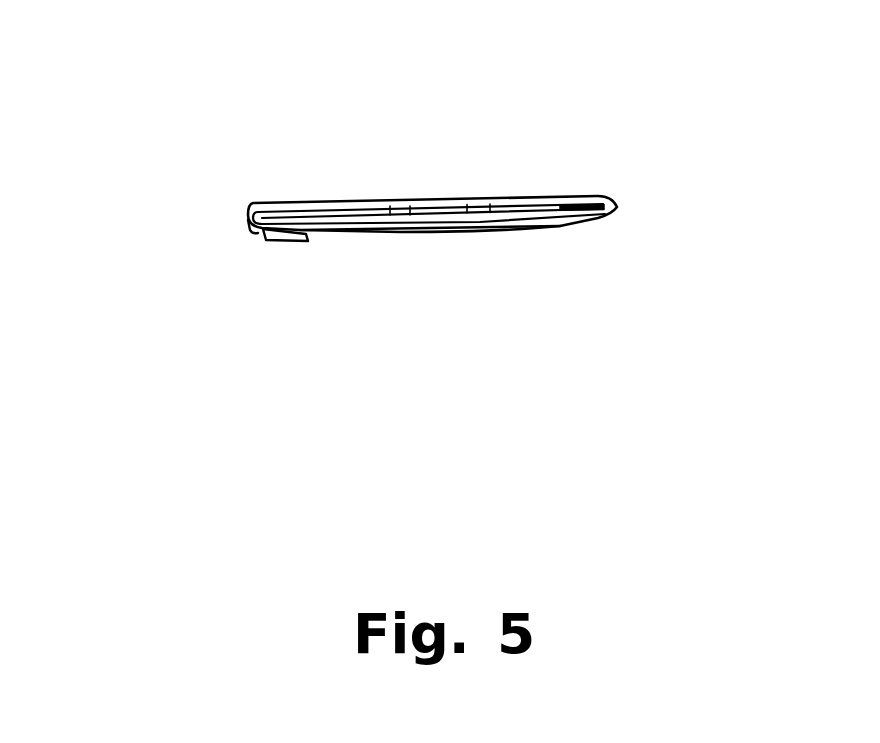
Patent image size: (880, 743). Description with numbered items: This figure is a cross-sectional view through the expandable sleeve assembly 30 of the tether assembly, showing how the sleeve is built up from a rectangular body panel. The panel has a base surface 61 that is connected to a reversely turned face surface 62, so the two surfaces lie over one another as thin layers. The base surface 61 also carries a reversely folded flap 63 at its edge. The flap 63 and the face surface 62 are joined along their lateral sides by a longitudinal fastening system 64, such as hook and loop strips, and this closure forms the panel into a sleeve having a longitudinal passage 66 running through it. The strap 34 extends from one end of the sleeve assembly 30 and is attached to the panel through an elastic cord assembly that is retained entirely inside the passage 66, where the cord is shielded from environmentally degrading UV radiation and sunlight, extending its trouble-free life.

The expandable sleeve assembly 30 is at (373, 202).
The strap 34 is at (468, 215).
The base surface 61 is at (557, 202).
The face surface 62 is at (483, 233).
The flap 63 is at (253, 231).
The longitudinal fastening system 64 is at (283, 241).
The longitudinal passage 66 is at (388, 217).